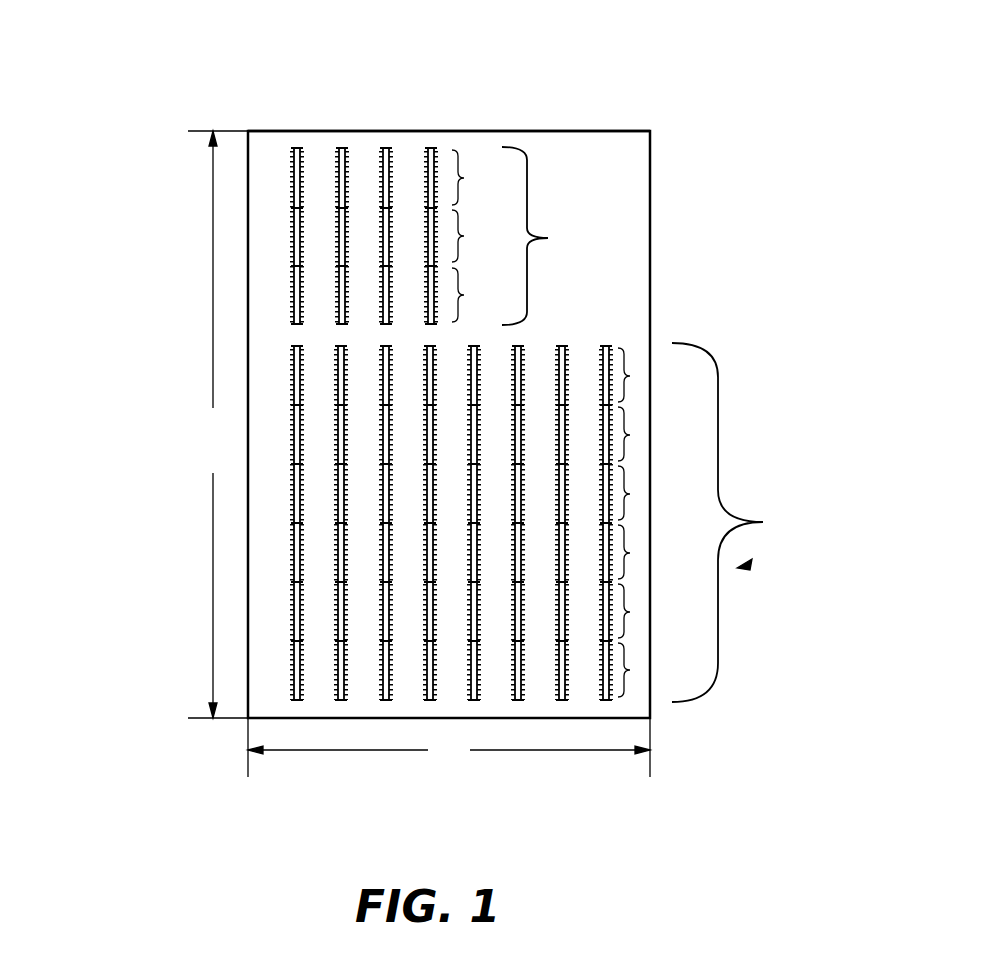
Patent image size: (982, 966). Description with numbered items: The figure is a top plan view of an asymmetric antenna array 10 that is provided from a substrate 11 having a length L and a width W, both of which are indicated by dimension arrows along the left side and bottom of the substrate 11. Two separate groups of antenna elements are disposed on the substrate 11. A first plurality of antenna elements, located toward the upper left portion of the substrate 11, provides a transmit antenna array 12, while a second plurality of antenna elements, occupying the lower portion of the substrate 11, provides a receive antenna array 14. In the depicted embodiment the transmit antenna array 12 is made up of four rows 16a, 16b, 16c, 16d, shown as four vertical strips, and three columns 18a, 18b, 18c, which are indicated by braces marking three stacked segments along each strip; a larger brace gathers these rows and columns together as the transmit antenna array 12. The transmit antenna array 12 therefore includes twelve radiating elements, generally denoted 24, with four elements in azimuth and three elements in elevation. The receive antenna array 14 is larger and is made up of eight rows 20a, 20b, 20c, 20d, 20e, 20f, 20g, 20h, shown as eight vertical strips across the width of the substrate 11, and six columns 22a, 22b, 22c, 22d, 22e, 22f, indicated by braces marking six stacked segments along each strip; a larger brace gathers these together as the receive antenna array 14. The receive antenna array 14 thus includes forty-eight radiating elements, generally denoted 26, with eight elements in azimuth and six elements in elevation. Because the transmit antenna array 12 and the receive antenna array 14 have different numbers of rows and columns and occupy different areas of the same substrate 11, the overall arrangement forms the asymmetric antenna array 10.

The asymmetric antenna array 10 is at (135, 553).
The substrate 11 is at (623, 270).
The transmit antenna array 12 is at (438, 188).
The receive antenna array 14 is at (522, 581).
The row 16a is at (297, 148).
The row 16b is at (342, 148).
The row 16c is at (386, 148).
The row 16d is at (431, 148).
The column 18a is at (464, 178).
The column 18b is at (464, 236).
The column 18c is at (464, 295).
The row 20a is at (297, 700).
The row 20b is at (341, 700).
The row 20c is at (386, 700).
The row 20d is at (430, 700).
The row 20e is at (474, 700).
The row 20f is at (518, 700).
The row 20g is at (562, 700).
The row 20h is at (606, 700).
The column 22a is at (630, 376).
The column 22b is at (630, 435).
The column 22c is at (630, 494).
The column 22d is at (630, 553).
The column 22e is at (630, 612).
The column 22f is at (630, 670).
The radiating elements 24 is at (600, 110).
The radiating elements 26 is at (748, 565).